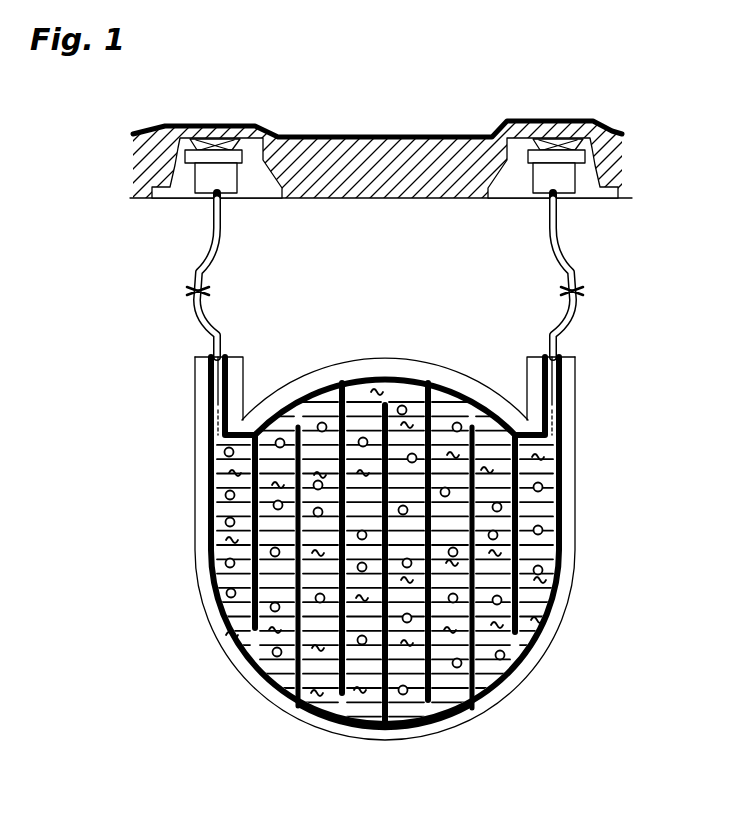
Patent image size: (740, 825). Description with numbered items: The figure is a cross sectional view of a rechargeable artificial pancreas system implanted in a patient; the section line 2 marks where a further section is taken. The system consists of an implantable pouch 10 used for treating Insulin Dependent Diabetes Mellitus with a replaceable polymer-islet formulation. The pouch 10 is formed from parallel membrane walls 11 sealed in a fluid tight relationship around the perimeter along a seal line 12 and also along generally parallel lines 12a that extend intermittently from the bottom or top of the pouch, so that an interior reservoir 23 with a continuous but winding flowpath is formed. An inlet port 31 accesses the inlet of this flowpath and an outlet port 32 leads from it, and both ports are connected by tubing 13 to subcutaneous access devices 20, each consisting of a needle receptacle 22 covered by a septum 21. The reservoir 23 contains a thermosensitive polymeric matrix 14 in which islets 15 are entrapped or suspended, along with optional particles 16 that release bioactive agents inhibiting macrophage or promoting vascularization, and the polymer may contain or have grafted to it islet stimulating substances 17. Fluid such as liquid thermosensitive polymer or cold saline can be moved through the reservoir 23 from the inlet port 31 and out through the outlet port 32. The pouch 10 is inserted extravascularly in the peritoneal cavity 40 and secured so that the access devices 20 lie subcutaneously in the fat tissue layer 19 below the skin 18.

The section line 2- 2 is at (173, 518).
The implantable pouch 10 is at (548, 650).
The membrane walls 11 is at (572, 468).
The seal line 12 is at (560, 392).
The parallel lines 12a is at (290, 485).
The tubing 13 is at (208, 262).
The thermosensitive polymeric matrix 14 is at (455, 703).
The islets 15 is at (273, 652).
The particles 16 is at (225, 595).
The islet stimulating substances 17 is at (320, 697).
The skin 18 is at (417, 137).
The fat tissue layer 19 is at (402, 176).
The subcutaneous access devices 20 is at (137, 178).
The septum 21 is at (213, 143).
The needle receptacle 22 is at (556, 188).
The interior reservoir 23 is at (540, 598).
The inlet port 31 is at (197, 357).
The outlet port 32 is at (557, 357).
The peritoneal cavity 40 is at (126, 274).